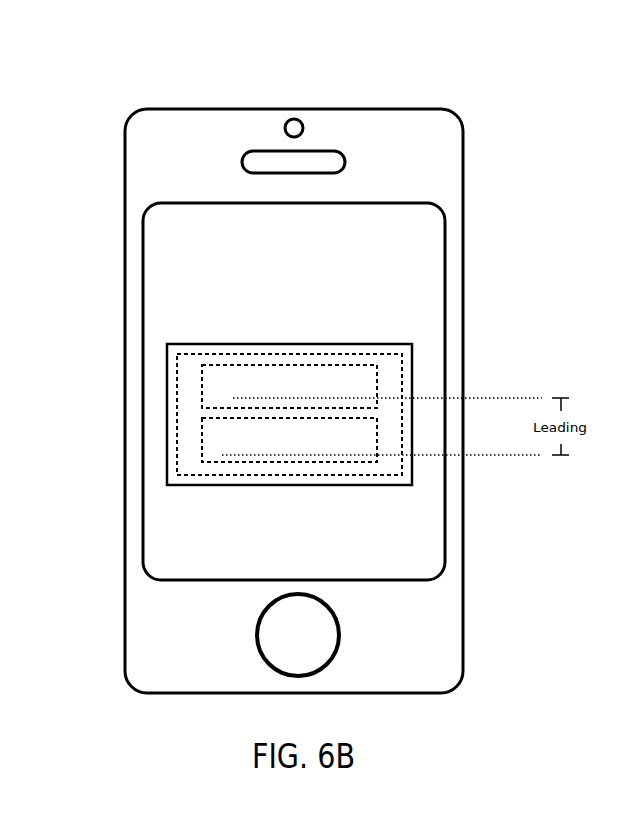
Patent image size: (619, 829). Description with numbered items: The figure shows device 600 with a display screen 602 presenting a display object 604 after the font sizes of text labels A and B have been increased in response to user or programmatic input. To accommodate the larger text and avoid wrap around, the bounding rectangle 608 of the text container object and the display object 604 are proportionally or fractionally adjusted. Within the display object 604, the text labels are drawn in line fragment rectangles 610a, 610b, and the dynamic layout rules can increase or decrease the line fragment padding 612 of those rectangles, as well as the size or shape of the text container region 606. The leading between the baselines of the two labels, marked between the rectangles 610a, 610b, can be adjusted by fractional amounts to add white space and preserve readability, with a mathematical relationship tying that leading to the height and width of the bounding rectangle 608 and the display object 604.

The device 600 is at (458, 111).
The display screen 602 is at (425, 243).
The display object 604 is at (366, 344).
The text container region 606 is at (192, 440).
The bounding rectangle 608 is at (177, 475).
The line fragment rectangle 610a is at (377, 385).
The line fragment rectangle 610b is at (377, 440).
The line fragment padding 612 is at (222, 387).